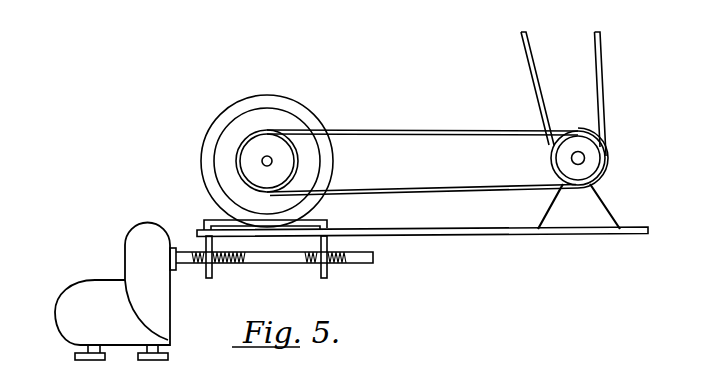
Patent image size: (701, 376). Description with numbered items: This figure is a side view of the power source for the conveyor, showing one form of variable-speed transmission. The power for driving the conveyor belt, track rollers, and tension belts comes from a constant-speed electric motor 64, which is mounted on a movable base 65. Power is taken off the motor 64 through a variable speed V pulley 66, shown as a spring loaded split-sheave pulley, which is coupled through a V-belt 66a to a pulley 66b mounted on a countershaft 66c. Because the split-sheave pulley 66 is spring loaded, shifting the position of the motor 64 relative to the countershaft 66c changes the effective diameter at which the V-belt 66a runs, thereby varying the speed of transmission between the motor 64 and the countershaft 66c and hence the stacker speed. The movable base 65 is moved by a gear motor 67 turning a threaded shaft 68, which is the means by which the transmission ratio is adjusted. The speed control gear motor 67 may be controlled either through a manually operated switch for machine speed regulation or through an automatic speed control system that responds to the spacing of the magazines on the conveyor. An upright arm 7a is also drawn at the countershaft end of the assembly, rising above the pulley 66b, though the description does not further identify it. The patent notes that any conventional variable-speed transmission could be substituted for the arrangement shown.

The arm 7a is at (595, 52).
The constant-speed electric motor 64 is at (285, 105).
The movable base 65 is at (317, 222).
The variable speed V pulley 66 is at (240, 152).
The V-belt 66a is at (425, 129).
The pulley 66b is at (592, 148).
The countershaft 66c is at (585, 160).
The gear motor 67 is at (73, 300).
The threaded shaft 68 is at (367, 261).